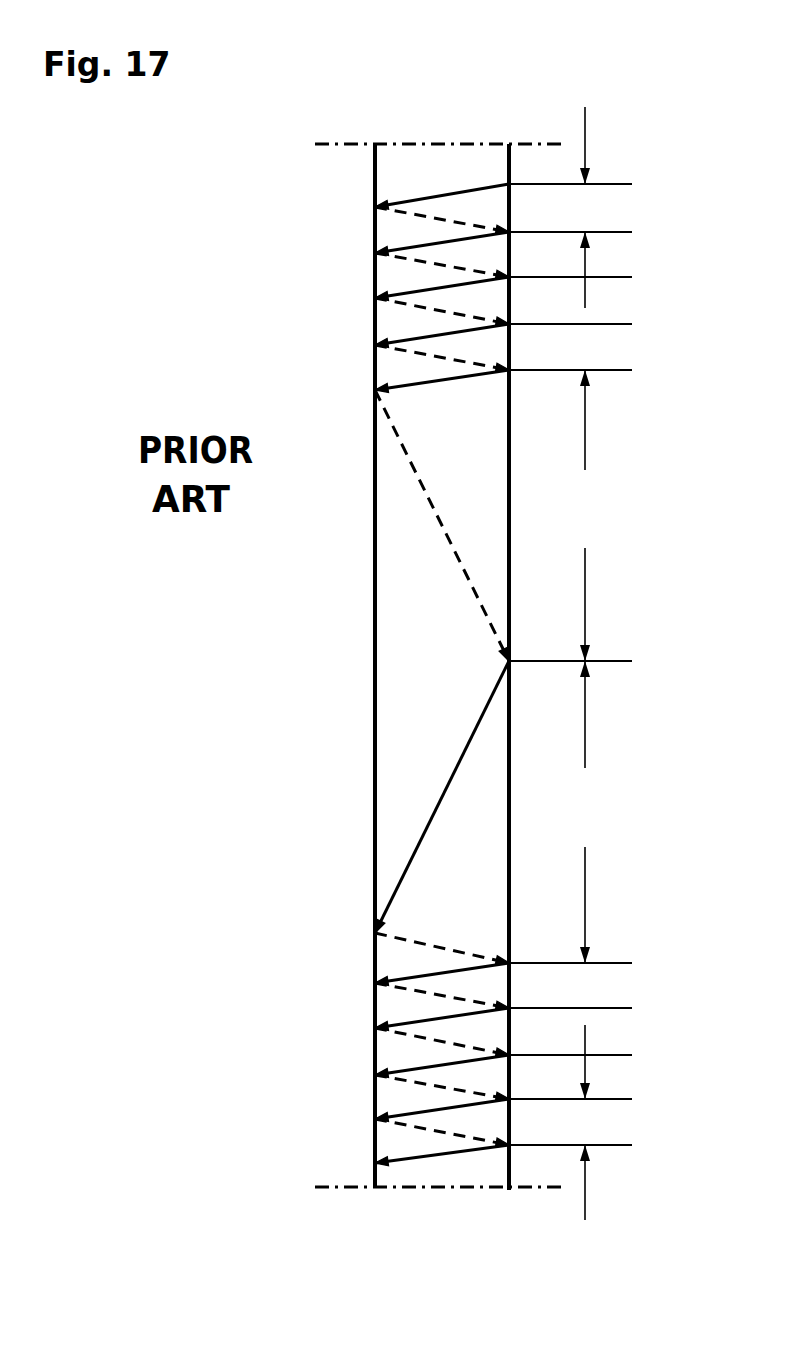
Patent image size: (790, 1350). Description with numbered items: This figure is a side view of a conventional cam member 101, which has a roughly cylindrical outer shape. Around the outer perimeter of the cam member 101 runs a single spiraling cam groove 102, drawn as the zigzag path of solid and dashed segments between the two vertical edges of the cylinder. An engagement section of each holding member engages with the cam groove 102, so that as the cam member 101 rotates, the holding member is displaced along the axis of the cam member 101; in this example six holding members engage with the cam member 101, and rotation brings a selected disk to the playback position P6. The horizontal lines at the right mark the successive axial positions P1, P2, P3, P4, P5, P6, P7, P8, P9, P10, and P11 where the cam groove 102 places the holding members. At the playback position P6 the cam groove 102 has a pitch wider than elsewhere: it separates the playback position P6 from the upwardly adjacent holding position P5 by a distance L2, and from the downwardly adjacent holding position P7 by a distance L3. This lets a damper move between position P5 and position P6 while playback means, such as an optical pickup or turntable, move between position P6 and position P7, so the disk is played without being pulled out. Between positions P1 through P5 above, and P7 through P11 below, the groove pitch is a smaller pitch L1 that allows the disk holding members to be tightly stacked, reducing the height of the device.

The cam member 101 is at (570, 49).
The cam groove 102 is at (358, 675).
The holding position P1 is at (595, 186).
The holding position P2 is at (595, 234).
The holding position P3 is at (595, 279).
The holding position P4 is at (595, 326).
The holding position P5 is at (595, 372).
The playback position P6 is at (595, 663).
The holding position P7 is at (595, 965).
The holding position P8 is at (595, 1010).
The holding position P9 is at (595, 1057).
The holding position P10 is at (602, 1101).
The holding position P11 is at (602, 1147).
The pitch L1 is at (581, 665).
The distance L2 is at (582, 515).
The distance L3 is at (582, 812).